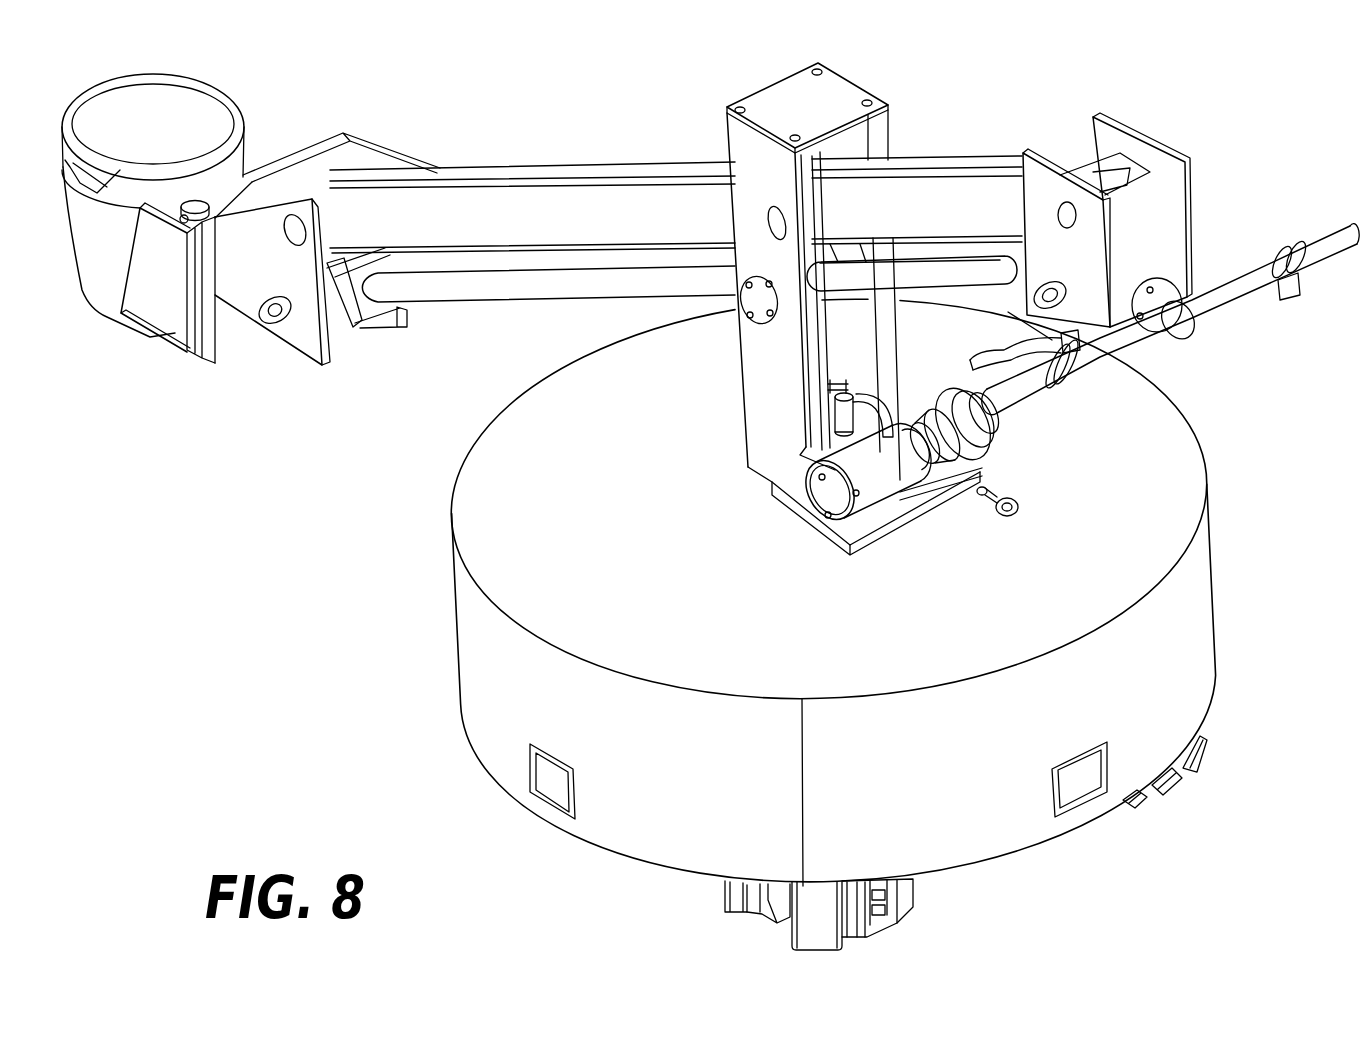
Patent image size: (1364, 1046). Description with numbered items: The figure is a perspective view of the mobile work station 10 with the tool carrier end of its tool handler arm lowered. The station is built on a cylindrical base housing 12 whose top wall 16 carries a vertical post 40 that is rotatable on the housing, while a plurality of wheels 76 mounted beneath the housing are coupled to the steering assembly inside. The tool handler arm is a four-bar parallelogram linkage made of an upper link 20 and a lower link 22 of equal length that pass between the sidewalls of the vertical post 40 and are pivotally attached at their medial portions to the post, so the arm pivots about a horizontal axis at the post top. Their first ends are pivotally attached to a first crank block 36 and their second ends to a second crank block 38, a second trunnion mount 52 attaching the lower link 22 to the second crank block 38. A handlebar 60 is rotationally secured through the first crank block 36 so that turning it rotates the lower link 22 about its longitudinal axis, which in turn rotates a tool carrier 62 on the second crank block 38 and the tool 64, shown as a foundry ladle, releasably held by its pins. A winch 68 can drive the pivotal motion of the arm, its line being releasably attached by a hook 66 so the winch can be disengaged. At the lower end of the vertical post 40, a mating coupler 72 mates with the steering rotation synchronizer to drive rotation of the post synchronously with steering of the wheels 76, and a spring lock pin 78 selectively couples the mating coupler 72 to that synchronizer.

The mobile work station 10 is at (1247, 438).
The base housing 12 is at (1190, 643).
The top wall 16 is at (470, 503).
The upper link 20 is at (492, 222).
The lower link 22 is at (530, 283).
The first crank block 36 is at (1182, 217).
The second crank block 38 is at (307, 341).
The vertical post 40 is at (890, 139).
The second trunnion mount 52 is at (360, 312).
The handlebar 60 is at (1237, 288).
The tool carrier 62 is at (178, 329).
The tool 64 is at (212, 82).
The hook 66 is at (1018, 500).
The winch 68 is at (877, 490).
The mating coupler 72 is at (858, 414).
The wheels 76 is at (811, 927).
The spring lock pin 78 is at (845, 413).